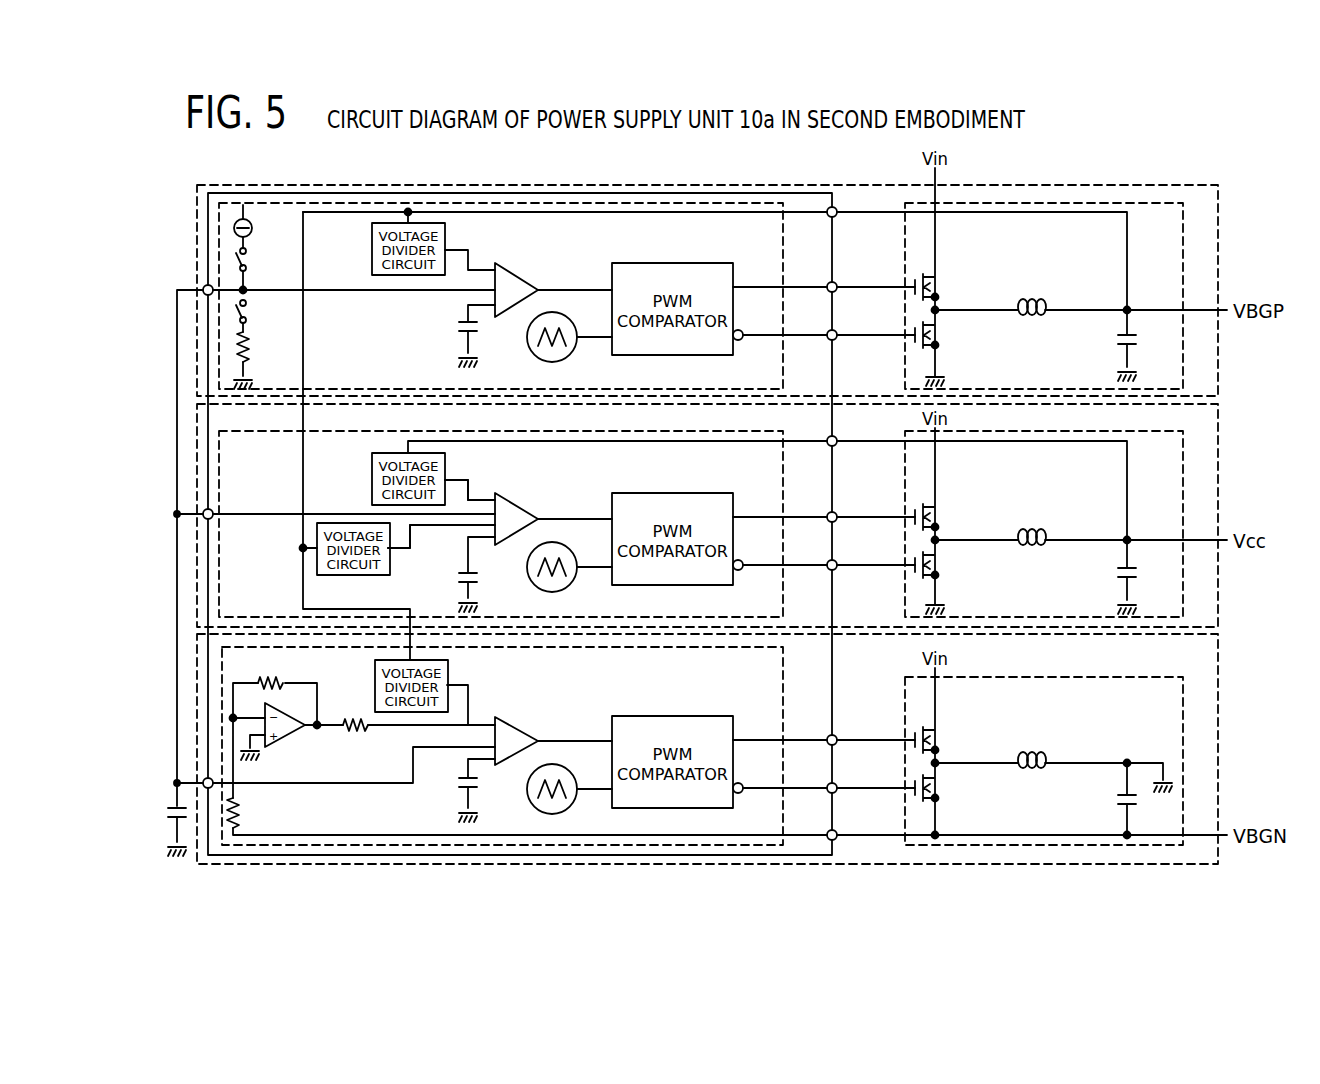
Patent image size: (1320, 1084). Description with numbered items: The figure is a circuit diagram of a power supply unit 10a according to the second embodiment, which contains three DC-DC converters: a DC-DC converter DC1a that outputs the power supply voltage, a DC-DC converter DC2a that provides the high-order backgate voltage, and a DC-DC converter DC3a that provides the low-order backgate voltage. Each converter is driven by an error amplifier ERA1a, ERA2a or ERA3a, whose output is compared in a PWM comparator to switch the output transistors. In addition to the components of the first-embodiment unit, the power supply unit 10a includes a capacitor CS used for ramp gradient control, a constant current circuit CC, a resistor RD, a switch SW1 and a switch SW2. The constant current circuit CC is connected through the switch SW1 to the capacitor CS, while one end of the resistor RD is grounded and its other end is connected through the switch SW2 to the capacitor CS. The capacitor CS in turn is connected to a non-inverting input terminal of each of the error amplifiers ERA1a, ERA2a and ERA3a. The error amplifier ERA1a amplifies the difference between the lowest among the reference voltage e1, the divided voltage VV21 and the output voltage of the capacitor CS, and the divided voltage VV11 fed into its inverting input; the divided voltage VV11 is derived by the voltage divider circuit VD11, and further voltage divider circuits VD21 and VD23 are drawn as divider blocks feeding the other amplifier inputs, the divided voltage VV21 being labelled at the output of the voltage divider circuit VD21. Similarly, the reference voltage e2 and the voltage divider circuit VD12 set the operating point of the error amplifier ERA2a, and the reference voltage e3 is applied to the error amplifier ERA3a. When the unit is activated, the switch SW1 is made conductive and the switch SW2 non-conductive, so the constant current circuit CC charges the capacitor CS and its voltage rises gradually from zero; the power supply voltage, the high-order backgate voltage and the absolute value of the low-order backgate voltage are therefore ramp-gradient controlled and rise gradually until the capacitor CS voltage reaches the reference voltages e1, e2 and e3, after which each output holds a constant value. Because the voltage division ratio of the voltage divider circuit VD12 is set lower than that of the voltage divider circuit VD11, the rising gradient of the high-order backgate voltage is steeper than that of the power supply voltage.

The power supply unit 10a is at (695, 179).
The DC-DC converter DC1a is at (1218, 442).
The DC-DC converter DC2a is at (1218, 218).
The DC-DC converter DC3a is at (1218, 682).
The error amplifier ERA1a is at (514, 507).
The error amplifier ERA2a is at (514, 278).
The error amplifier ERA3a is at (514, 728).
The voltage divider circuit VD11 is at (368, 481).
The voltage divider circuit VD12 is at (368, 251).
The voltage divider circuit VD21 is at (325, 575).
The voltage divider circuit VD23 is at (450, 672).
The divided voltage VV11 is at (456, 480).
The divided voltage VV21 is at (410, 550).
The constant current circuit CC is at (256, 229).
The switch SW1 is at (262, 260).
The switch SW2 is at (262, 313).
The resistor RD is at (258, 348).
The capacitor CS is at (163, 830).
The reference voltage e1 is at (465, 574).
The reference voltage e2 is at (464, 336).
The reference voltage e3 is at (464, 790).